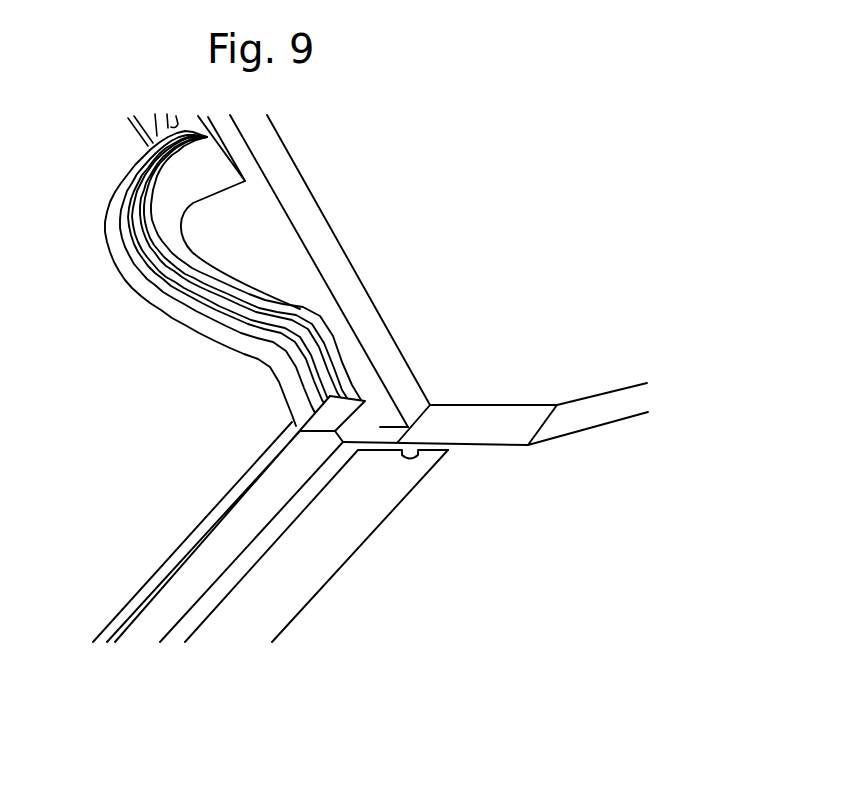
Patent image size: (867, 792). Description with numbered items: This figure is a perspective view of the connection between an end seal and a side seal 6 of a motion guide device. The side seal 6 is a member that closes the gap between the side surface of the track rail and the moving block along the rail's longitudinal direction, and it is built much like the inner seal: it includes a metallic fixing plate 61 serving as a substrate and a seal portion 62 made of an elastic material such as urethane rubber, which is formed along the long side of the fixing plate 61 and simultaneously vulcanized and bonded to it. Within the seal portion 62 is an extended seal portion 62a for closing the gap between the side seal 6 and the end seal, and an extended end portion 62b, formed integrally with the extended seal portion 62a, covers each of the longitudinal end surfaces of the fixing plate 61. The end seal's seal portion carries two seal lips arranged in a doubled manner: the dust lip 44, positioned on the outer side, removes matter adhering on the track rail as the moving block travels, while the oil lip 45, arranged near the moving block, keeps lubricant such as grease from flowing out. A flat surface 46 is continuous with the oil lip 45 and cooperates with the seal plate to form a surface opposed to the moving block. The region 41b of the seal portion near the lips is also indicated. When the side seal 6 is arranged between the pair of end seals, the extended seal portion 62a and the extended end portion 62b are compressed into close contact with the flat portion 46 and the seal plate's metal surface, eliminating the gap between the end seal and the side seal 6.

The side seal 6 is at (306, 611).
The fixing plate 61 is at (352, 520).
The seal portion 62 is at (196, 575).
The extended seal portion 62a is at (317, 450).
The extended end portion 62b is at (448, 452).
The bent portion of plate 41b is at (215, 247).
The dust lip 44 is at (183, 288).
The oil lip 45 is at (203, 340).
The flat surface 46 is at (412, 450).